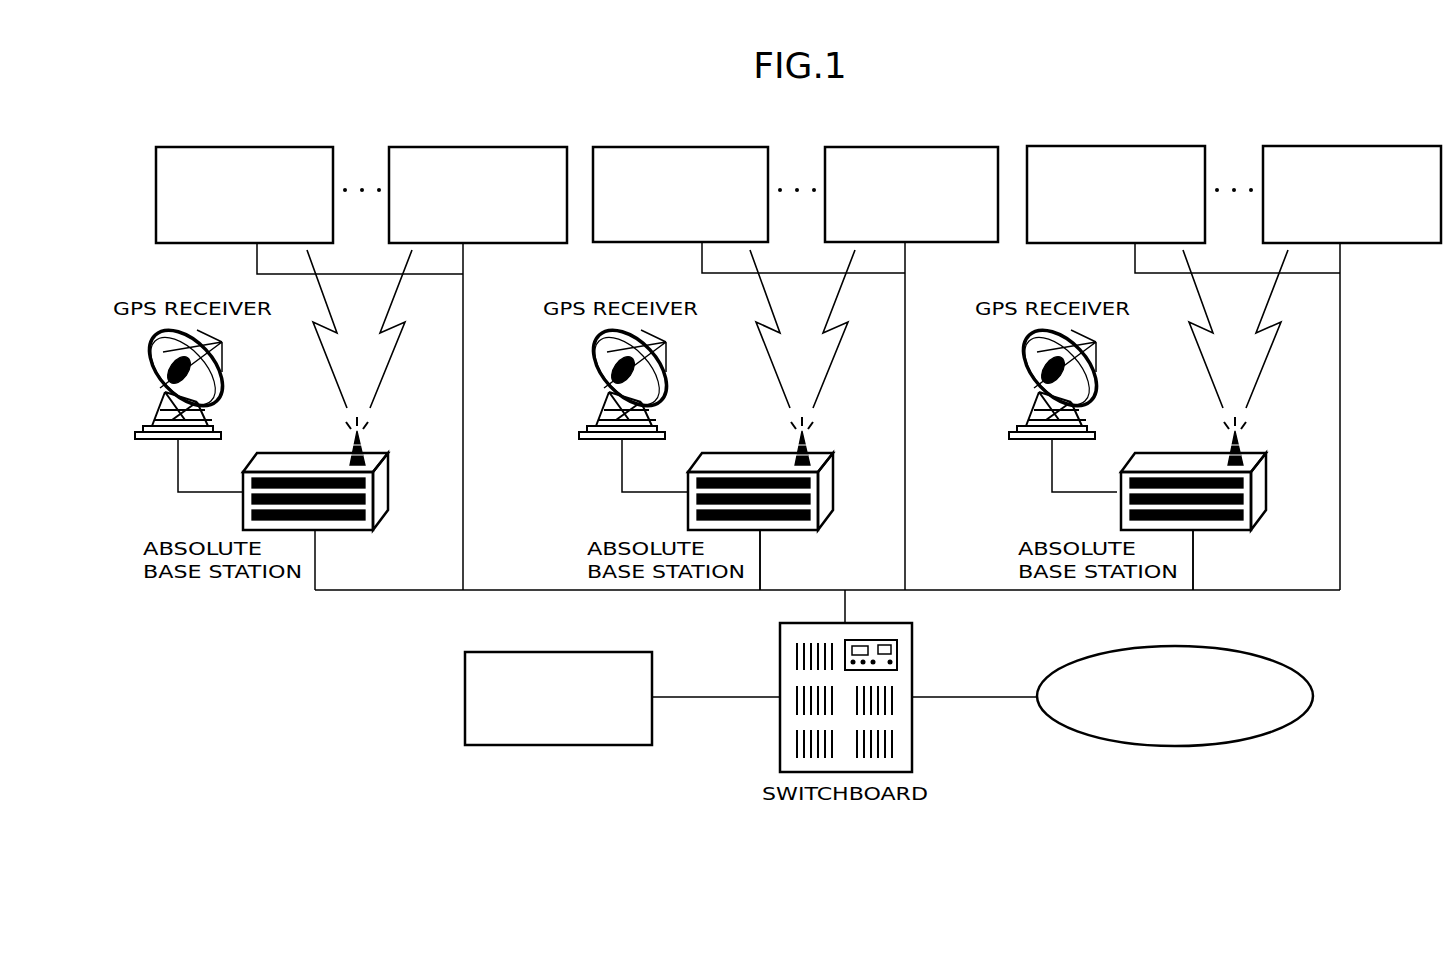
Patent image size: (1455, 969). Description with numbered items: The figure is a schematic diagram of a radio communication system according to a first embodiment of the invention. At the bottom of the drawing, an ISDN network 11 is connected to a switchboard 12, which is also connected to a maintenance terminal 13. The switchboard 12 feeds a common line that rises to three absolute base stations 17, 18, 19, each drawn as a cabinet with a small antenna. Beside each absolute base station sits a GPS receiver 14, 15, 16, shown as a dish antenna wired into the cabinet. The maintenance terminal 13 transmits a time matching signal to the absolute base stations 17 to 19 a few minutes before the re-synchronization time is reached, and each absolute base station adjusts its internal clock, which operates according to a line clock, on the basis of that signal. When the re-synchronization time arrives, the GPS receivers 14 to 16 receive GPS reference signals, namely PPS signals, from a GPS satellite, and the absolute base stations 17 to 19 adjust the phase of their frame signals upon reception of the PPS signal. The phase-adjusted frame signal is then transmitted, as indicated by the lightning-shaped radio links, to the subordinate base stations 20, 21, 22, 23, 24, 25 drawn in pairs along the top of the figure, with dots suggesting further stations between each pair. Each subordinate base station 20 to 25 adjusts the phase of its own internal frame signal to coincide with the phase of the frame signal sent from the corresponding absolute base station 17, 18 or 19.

The ISDN network 11 is at (1175, 746).
The switchboard 12 is at (914, 737).
The maintenance terminal 13 is at (563, 745).
The GPS receiver 14 is at (230, 343).
The GPS receiver 15 is at (673, 343).
The GPS receiver 16 is at (1106, 343).
The absolute base station 17 is at (392, 489).
The absolute base station 18 is at (834, 487).
The absolute base station 19 is at (1268, 487).
The subordinate base station 20 is at (268, 147).
The subordinate base station 21 is at (453, 147).
The subordinate base station 22 is at (702, 147).
The subordinate base station 23 is at (905, 147).
The subordinate base station 24 is at (1135, 146).
The subordinate base station 25 is at (1342, 146).